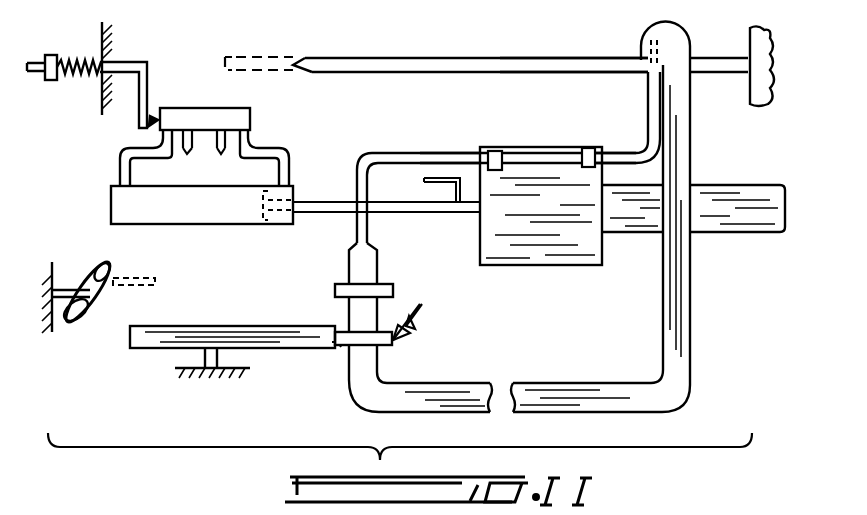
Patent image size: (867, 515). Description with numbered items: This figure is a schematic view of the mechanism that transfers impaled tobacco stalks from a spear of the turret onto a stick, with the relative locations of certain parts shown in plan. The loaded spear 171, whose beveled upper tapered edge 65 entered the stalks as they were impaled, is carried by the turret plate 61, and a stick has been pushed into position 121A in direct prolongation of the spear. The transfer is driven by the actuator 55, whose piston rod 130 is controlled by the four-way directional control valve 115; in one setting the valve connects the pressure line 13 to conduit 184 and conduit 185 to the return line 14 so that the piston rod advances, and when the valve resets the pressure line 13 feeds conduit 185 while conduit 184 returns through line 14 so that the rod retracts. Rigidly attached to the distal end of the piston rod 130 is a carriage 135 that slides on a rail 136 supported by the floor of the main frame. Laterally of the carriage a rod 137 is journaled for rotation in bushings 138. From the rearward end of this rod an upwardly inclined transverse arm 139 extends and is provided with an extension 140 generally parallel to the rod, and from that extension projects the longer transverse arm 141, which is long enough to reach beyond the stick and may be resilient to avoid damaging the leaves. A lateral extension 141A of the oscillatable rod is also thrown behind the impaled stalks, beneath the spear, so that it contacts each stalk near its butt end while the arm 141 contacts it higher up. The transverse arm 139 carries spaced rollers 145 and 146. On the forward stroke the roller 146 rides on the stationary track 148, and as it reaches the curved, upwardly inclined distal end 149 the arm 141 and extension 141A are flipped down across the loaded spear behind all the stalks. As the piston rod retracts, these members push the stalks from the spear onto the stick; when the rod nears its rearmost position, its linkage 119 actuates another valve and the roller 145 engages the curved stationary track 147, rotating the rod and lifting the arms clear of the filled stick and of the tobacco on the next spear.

The linkage 119 is at (136, 60).
The stick position 121A is at (260, 54).
The upper tapered edge 65 is at (336, 57).
The loaded spear 171 is at (545, 57).
The plate 61 is at (772, 90).
The four-way directional control valve 115 is at (201, 98).
The return line 14 is at (190, 152).
The pressure line 13 is at (220, 152).
The conduit 184 is at (118, 172).
The conduit 185 is at (284, 150).
The actuator 55 is at (184, 223).
The piston rod 130 is at (448, 213).
The transverse arm 139 is at (358, 172).
The rod 137 is at (456, 152).
The bushings 138 is at (500, 152).
The carriage 135 is at (566, 265).
The rail 136 is at (744, 232).
The lateral extension 141A is at (651, 131).
The transverse arm 141 is at (696, 162).
The extension 140 is at (644, 410).
The roller 146 is at (330, 342).
The roller 145 is at (396, 288).
The curved upwardly inclined distal end 149 is at (418, 306).
The track 148 is at (266, 300).
The curved stationary track 147 is at (108, 240).